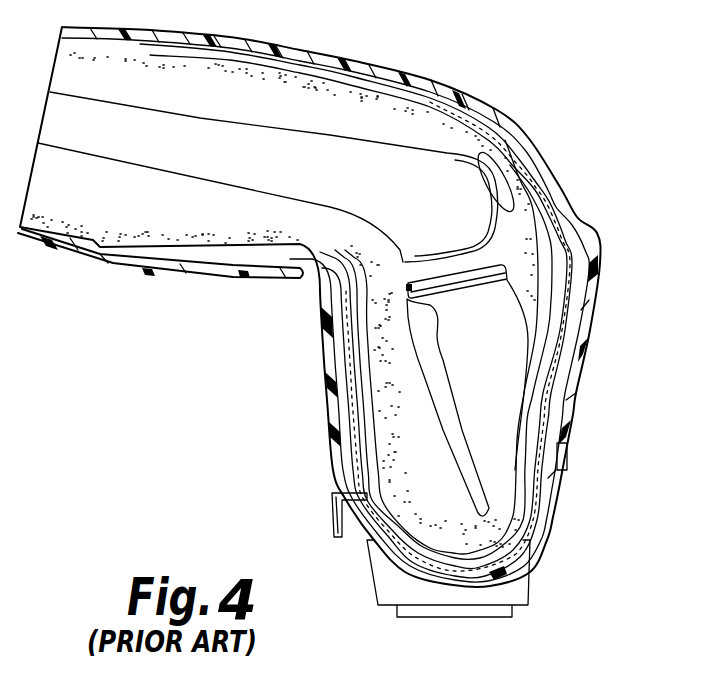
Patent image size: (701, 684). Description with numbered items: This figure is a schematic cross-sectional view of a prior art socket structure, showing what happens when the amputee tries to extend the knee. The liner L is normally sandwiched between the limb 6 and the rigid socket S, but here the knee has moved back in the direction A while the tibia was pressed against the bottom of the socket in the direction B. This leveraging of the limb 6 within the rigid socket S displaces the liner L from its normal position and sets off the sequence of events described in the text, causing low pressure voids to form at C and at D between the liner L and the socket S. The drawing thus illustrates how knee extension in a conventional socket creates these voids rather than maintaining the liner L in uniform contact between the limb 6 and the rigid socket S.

The knee movement A is at (372, 186).
The tibia pressing direction B is at (433, 495).
The low pressure void C is at (538, 198).
The low pressure void D is at (562, 200).
The liner L is at (577, 252).
The rigid socket S is at (567, 337).
The limb 6 is at (505, 560).